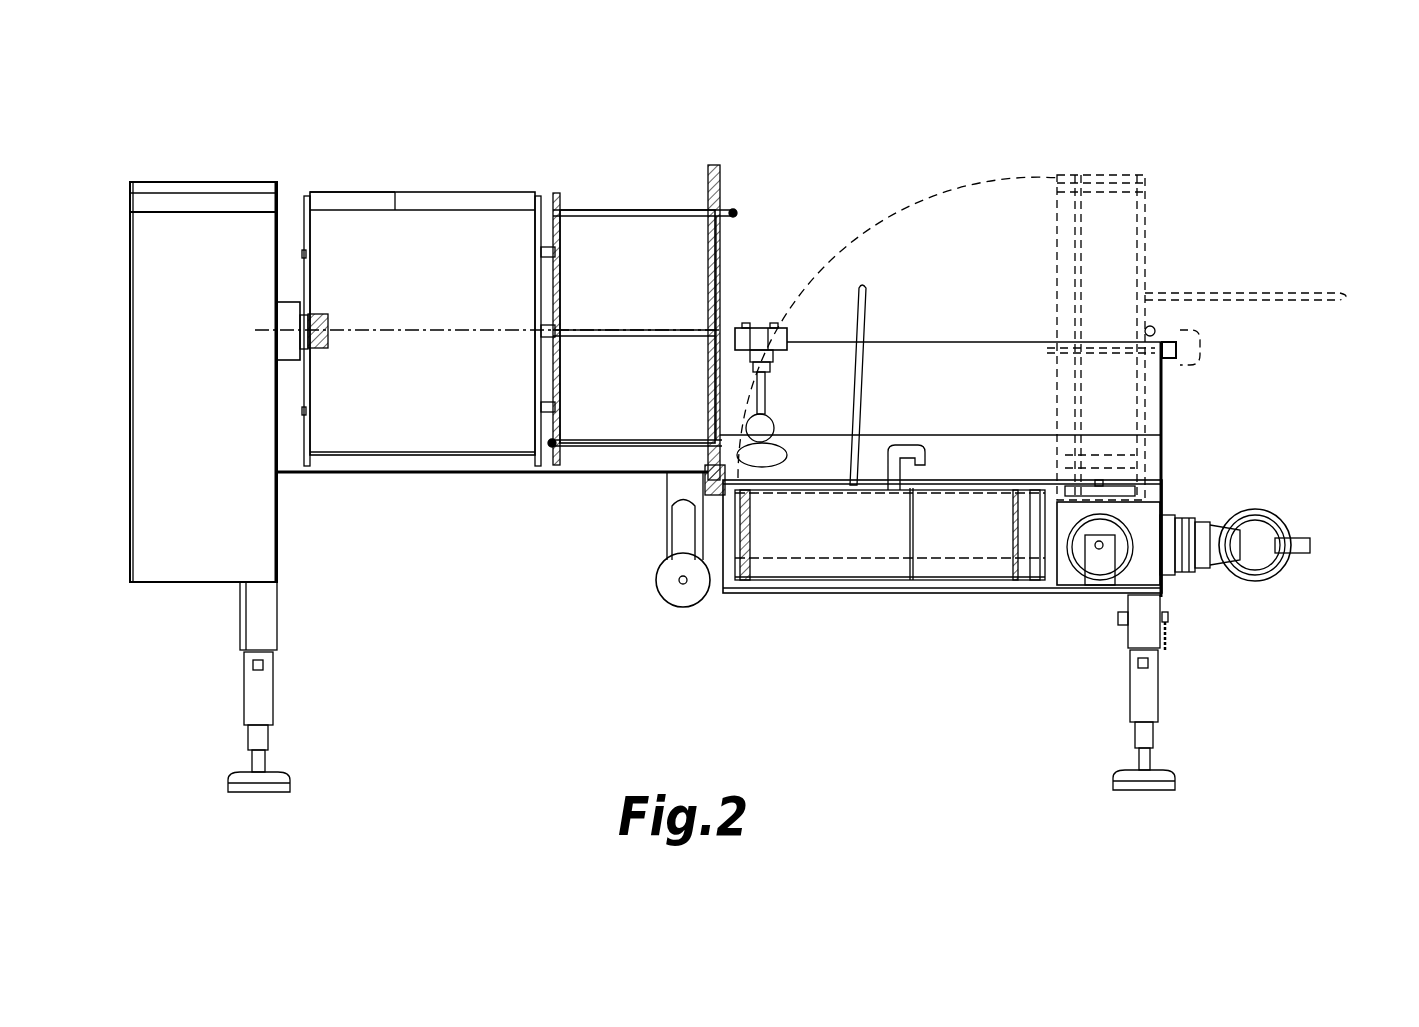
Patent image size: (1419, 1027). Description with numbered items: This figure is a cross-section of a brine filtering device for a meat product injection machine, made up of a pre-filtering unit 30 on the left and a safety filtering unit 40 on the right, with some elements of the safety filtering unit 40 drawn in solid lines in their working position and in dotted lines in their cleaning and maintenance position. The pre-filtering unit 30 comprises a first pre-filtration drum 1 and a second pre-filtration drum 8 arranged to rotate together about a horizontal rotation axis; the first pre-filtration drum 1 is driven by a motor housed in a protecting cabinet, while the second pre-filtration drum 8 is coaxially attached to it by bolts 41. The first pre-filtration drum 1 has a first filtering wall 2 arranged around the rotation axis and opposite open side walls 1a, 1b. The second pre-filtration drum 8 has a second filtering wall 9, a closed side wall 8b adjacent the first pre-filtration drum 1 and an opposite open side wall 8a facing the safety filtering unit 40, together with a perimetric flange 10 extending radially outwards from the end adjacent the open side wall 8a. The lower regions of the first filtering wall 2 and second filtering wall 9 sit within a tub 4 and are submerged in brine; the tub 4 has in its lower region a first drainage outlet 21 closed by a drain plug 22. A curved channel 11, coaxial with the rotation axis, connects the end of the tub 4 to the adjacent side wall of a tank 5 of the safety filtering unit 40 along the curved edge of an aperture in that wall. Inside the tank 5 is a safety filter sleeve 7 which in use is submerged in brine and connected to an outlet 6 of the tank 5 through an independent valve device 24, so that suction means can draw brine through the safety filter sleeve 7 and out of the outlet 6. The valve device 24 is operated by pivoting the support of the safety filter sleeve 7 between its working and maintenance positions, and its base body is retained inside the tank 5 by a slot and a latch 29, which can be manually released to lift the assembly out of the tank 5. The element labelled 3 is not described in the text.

The pre-filtering unit 30 is at (543, 102).
The first pre-filtration drum 1 is at (463, 238).
The open side wall 1a is at (535, 388).
The open side wall 1b is at (310, 410).
The first filtering wall 2 is at (395, 208).
The drum shell section 3 is at (358, 200).
The tub 4 is at (455, 475).
The tank 5 is at (965, 595).
The outlet 6 is at (1240, 580).
The safety filter sleeve 7 is at (825, 545).
The second pre-filtration drum 8 is at (648, 240).
The open side wall 8a is at (722, 253).
The closed side wall 8b is at (563, 302).
The second filtering wall 9 is at (605, 205).
The perimetric flange 10 is at (722, 185).
The curved channel 11 is at (680, 490).
The first drainage outlet 21 is at (672, 537).
The drain plug 22 is at (668, 600).
The valve device 24 is at (1082, 560).
The latch 29 is at (1120, 497).
The safety filtering unit 40 is at (1003, 312).
The bolts 41 is at (563, 405).